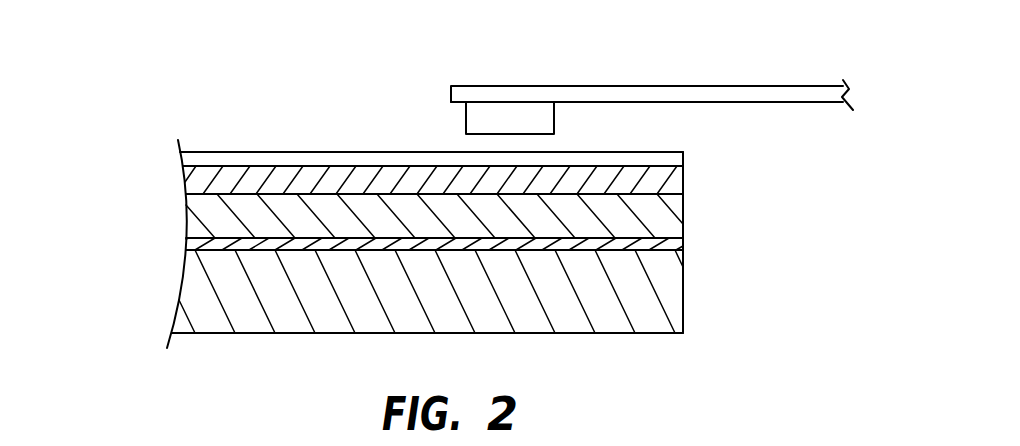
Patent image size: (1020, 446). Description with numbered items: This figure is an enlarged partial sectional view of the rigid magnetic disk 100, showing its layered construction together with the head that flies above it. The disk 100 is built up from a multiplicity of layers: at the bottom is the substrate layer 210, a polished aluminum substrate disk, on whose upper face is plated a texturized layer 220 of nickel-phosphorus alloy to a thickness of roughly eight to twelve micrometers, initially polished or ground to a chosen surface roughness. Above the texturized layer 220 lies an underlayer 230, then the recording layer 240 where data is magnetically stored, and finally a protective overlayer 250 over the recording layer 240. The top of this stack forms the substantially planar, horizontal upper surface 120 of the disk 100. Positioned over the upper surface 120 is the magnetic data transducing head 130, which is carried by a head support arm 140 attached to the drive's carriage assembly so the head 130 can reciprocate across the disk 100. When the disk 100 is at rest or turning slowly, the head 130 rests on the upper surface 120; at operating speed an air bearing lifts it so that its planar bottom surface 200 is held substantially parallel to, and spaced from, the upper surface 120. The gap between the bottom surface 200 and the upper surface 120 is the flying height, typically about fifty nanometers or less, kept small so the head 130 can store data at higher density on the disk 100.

The rigid magnetic disk 100 is at (471, 184).
The upper surface 120 is at (618, 150).
The magnetic data transducing head 130 is at (470, 107).
The head support arm 140 is at (668, 88).
The planar bottom surface 200 is at (467, 137).
The substrate layer 210 is at (183, 302).
The texturized layer 220 is at (678, 246).
The underlayer 230 is at (185, 222).
The recording layer 240 is at (678, 181).
The protective overlayer 250 is at (183, 155).